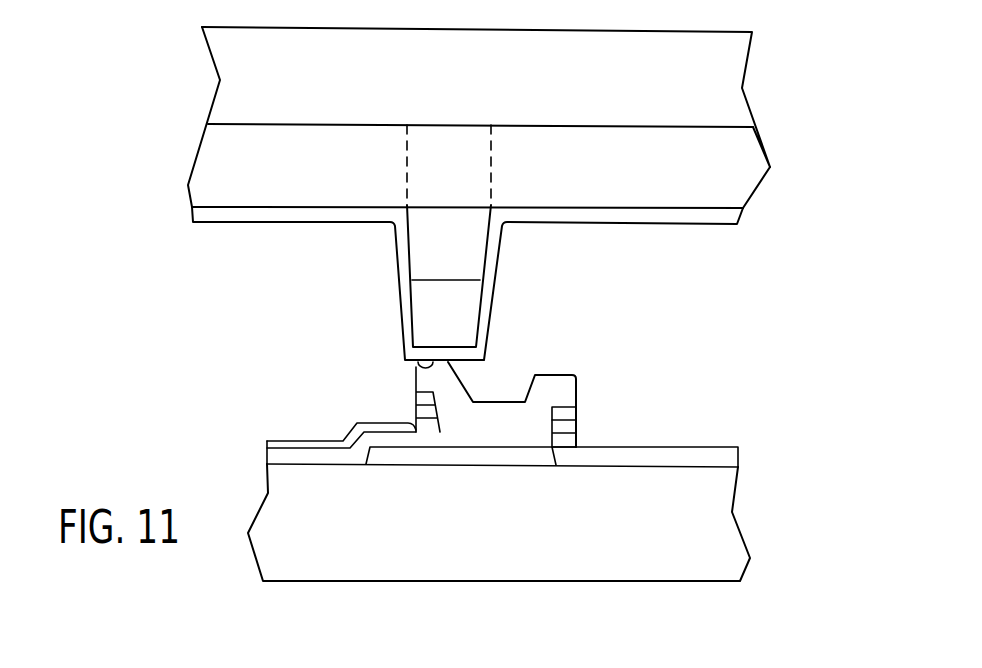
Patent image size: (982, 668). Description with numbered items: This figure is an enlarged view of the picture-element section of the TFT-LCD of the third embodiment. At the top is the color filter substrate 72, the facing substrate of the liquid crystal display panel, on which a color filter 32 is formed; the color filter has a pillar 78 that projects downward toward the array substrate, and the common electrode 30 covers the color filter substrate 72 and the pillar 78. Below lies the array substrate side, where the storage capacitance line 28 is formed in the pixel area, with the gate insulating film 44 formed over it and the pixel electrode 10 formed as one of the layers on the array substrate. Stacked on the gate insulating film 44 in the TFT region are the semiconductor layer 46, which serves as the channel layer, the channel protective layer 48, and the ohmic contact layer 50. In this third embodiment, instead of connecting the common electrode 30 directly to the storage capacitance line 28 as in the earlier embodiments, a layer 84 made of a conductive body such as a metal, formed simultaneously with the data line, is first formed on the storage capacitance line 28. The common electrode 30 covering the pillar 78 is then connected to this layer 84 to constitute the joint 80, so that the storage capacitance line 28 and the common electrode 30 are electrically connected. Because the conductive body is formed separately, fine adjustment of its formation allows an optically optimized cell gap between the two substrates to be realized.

The color filter substrate 72 is at (743, 75).
The color filter 32 is at (753, 180).
The common electrode 30 is at (285, 223).
The pillar 78 is at (463, 163).
The joint 80 is at (415, 365).
The layer made of a conductive body 84 is at (416, 382).
The pixel electrode 10 is at (313, 441).
The ohmic contact layer 50 is at (576, 412).
The channel protective layer 48 is at (576, 422).
The semiconductor layer 46 is at (576, 437).
The gate insulating film 44 is at (277, 456).
The storage capacitance line 28 is at (432, 460).